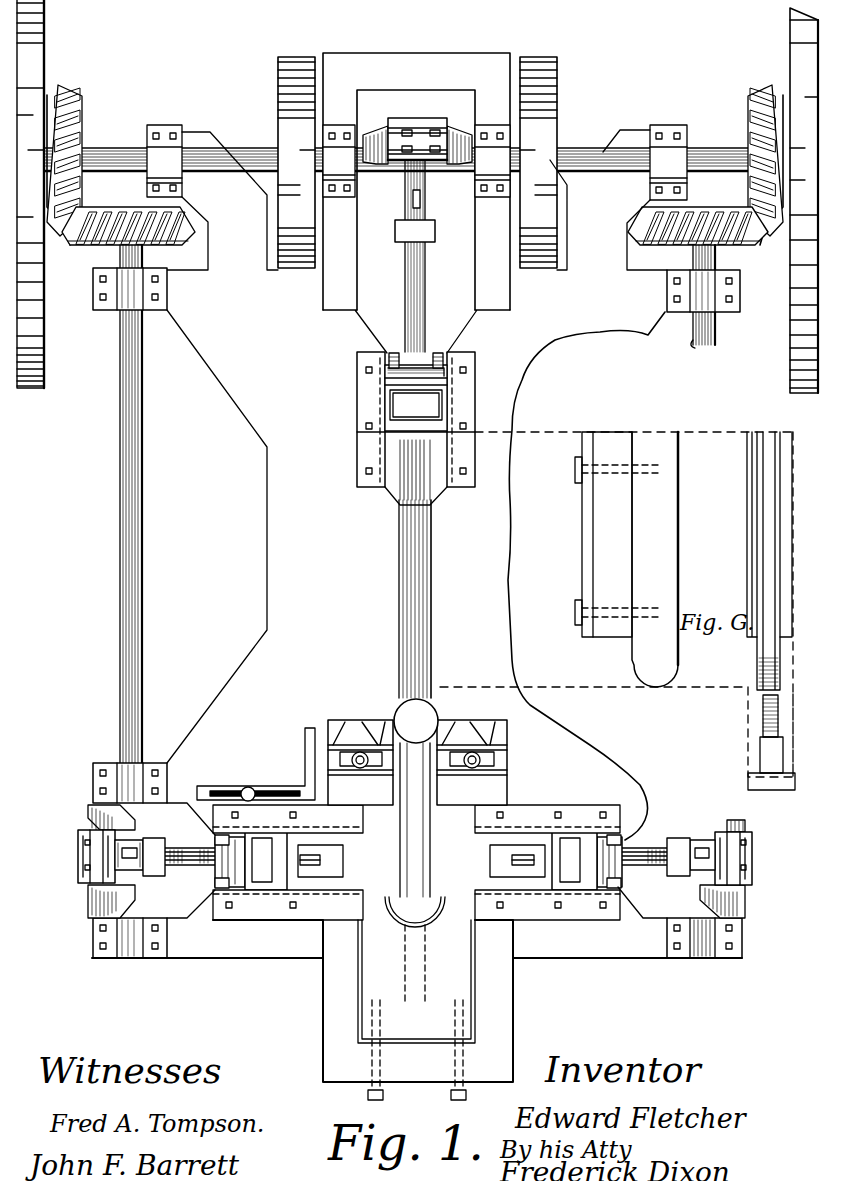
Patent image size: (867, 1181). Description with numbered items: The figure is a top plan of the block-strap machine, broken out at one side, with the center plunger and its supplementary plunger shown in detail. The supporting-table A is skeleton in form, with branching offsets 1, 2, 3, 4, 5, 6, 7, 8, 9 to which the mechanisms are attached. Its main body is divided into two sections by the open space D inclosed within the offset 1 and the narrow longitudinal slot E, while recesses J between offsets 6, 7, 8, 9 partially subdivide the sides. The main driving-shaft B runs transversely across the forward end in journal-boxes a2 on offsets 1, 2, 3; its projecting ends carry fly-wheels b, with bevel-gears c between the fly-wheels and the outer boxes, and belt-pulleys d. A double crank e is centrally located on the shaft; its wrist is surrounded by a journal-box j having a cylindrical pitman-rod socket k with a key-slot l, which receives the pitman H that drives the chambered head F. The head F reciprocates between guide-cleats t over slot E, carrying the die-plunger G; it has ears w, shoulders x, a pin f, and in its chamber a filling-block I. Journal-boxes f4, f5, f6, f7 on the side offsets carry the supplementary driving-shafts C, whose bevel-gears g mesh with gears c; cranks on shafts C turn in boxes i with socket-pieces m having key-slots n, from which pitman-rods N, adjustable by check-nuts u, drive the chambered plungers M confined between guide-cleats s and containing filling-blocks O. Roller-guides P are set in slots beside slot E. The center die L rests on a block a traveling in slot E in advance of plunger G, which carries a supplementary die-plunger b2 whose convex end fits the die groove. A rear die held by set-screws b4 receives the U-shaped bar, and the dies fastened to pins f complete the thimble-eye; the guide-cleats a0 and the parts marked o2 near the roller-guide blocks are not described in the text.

In FIG. 1, the offset 1 is at (416, 203).
In FIG. 1, the offset 2 is at (222, 447).
In FIG. 1, the offset 3 is at (608, 200).
In FIG. 1, the offset 4 is at (77, 291).
In FIG. 1, the offset 5 is at (757, 293).
In FIG. 1, the offset 6 is at (75, 785).
In FIG. 1, the offset 7 is at (75, 943).
In FIG. 1, the offset 8 is at (765, 847).
In FIG. 1, the offset 9 is at (762, 940).
In FIG. 1, the supporting-table A is at (309, 560).
In FIG. 1, the main driving-shaft B is at (402, 157).
In FIG. 1, the supplementary driving-shaft C is at (416, 522).
In FIG. G, the supplementary driving-shaft C is at (767, 810).
In FIG. 1, the open space D is at (453, 331).
In FIG. 1, the slot E is at (415, 820).
In FIG. 1, the chambered head F is at (404, 425).
In FIG. 1, the die-plunger G is at (433, 565).
In FIG. G, the die-plunger G is at (685, 611).
In FIG. 1, the pitman H is at (412, 312).
In FIG. 1, the filling-block I is at (416, 435).
In FIG. 1, the recess J is at (412, 869).
In FIG. 1, the center die L is at (416, 721).
In FIG. 1, the chambered plunger M is at (417, 942).
In FIG. 1, the pitman-rod N is at (416, 857).
In FIG. 1, the filling-block O is at (421, 860).
In FIG. 1, the roller-guide P is at (325, 760).
In FIG. 1, the block a is at (394, 697).
In FIG. 1, the journal-box a2 is at (417, 162).
In FIG. 1, the bracket a0 is at (442, 794).
In FIG. 1, the fly-wheel b is at (417, 349).
In FIG. G, the supplementary die-plunger b2 is at (715, 584).
In FIG. 1, the set-screw b4 is at (424, 1056).
In FIG. 1, the bevel-gear c is at (415, 161).
In FIG. 1, the belt-pulley d is at (417, 162).
In FIG. 1, the double crank e is at (417, 140).
In FIG. 1, the pin f is at (704, 947).
In FIG. 1, the journal-box f4 is at (130, 289).
In FIG. 1, the journal-box f5 is at (703, 291).
In FIG. 1, the journal-box f6 is at (130, 783).
In FIG. 1, the journal-box f7 is at (130, 938).
In FIG. 1, the bevel-gear g is at (415, 215).
In FIG. 1, the journal-box i is at (413, 857).
In FIG. 1, the journal-box j is at (417, 130).
In FIG. 1, the pitman-rod socket k is at (423, 256).
In FIG. 1, the key-slot l is at (404, 196).
In FIG. 1, the socket-piece m is at (415, 849).
In FIG. 1, the key-slot n is at (88, 898).
In FIG. 1, the clamp o2 is at (332, 718).
In FIG. 1, the collar q is at (415, 231).
In FIG. 1, the guide-cleat s is at (416, 862).
In FIG. 1, the guide-cleat t is at (416, 419).
In FIG. 1, the check-nut u is at (415, 609).
In FIG. 1, the ear w is at (437, 352).
In FIG. 1, the shoulder x is at (604, 938).